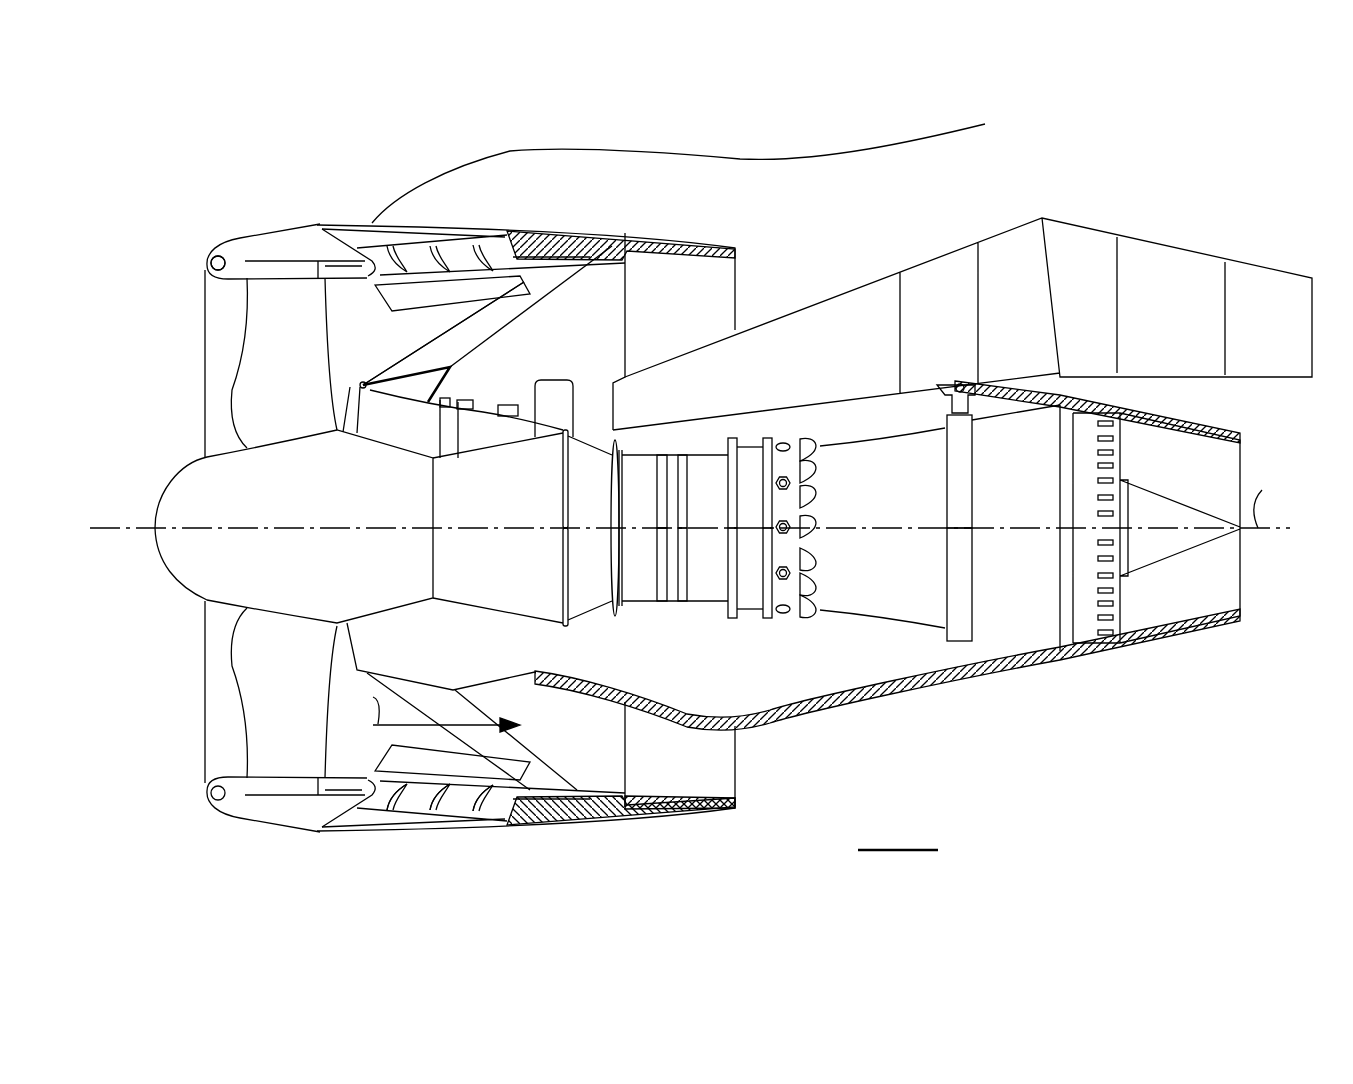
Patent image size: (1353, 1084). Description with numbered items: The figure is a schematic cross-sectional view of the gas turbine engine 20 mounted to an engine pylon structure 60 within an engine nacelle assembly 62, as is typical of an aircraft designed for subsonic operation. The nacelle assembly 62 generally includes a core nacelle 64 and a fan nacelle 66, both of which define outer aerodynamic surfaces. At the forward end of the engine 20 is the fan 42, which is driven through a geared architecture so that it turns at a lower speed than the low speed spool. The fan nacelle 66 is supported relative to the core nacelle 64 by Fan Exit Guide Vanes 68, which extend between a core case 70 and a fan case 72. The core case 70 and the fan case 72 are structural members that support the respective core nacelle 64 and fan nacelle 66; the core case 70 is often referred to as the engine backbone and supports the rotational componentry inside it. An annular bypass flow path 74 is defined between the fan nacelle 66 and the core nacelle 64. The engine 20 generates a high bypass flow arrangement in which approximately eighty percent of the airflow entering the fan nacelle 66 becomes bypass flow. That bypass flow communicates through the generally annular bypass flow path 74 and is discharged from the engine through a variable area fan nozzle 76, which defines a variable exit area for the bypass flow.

The gas turbine engine 20 is at (733, 150).
The fan 42 is at (298, 367).
The engine pylon structure 60 is at (1170, 278).
The engine nacelle assembly 62 is at (366, 206).
The core nacelle 64 is at (933, 690).
The fan nacelle 66 is at (453, 808).
The Fan Exit Guide Vanes 68 is at (486, 318).
The core case 70 is at (510, 507).
The fan case 72 is at (286, 262).
The annular bypass flow path 74 is at (387, 353).
The variable area fan nozzle 76 is at (653, 815).